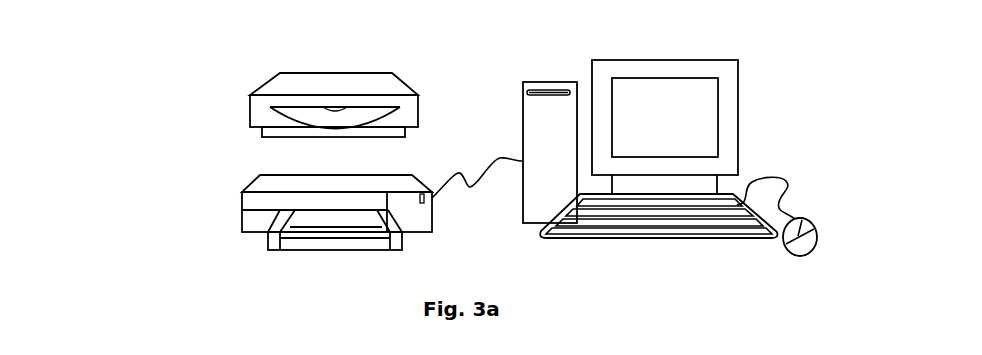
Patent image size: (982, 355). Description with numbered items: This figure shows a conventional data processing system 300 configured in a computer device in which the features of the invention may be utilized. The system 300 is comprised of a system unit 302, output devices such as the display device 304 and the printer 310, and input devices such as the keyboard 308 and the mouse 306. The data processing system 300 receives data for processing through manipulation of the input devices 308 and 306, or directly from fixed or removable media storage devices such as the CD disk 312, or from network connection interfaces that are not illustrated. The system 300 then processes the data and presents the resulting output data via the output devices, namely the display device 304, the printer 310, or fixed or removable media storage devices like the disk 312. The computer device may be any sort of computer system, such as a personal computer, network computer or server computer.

The data processing system 300 is at (187, 163).
The system unit 302 is at (504, 134).
The display device 304 is at (665, 107).
The mouse 306 is at (806, 216).
The keyboard 308 is at (658, 234).
The printer 310 is at (303, 212).
The CD disk 312 is at (334, 84).